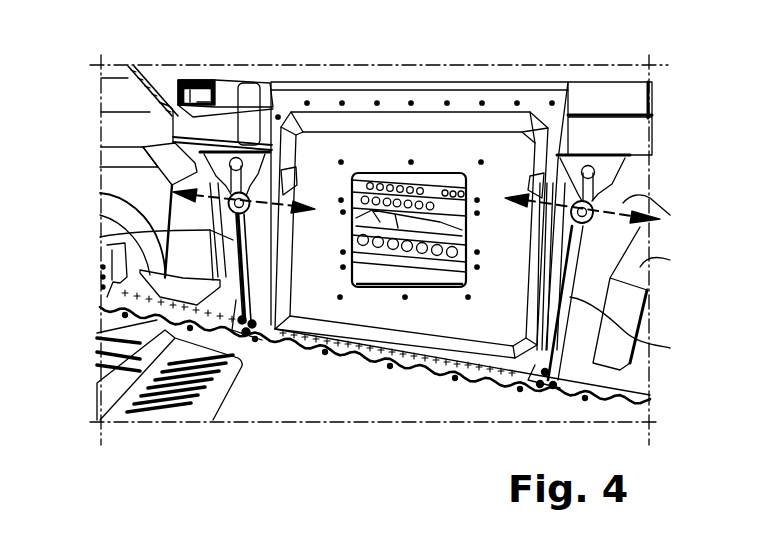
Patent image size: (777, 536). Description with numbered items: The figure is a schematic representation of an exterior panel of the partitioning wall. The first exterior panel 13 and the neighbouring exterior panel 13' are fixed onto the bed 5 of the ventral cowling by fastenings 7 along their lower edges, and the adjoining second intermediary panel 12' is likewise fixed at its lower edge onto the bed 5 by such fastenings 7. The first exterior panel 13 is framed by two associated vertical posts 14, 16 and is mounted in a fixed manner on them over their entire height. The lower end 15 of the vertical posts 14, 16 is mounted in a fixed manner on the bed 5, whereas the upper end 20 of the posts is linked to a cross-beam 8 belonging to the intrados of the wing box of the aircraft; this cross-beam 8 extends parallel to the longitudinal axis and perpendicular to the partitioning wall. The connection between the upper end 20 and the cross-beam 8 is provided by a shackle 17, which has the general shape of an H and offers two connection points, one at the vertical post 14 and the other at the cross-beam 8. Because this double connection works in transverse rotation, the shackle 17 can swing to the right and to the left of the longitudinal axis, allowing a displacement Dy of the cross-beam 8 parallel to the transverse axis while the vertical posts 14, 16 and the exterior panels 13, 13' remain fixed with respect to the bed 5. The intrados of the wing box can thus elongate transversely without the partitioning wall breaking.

The bed 5 is at (343, 395).
The fastenings 7 is at (102, 307).
The cross-beam 8 is at (210, 91).
The second intermediary panel 12' is at (652, 282).
The first exterior panel 13 is at (386, 205).
The second exterior panel 13' is at (101, 106).
The vertical post 14 is at (105, 247).
The lower end of the vertical posts 15 is at (252, 348).
The vertical post 16 is at (573, 297).
The shackle 17 is at (127, 165).
The upper end of the vertical posts 20 is at (252, 120).
The displacement Dy is at (627, 196).